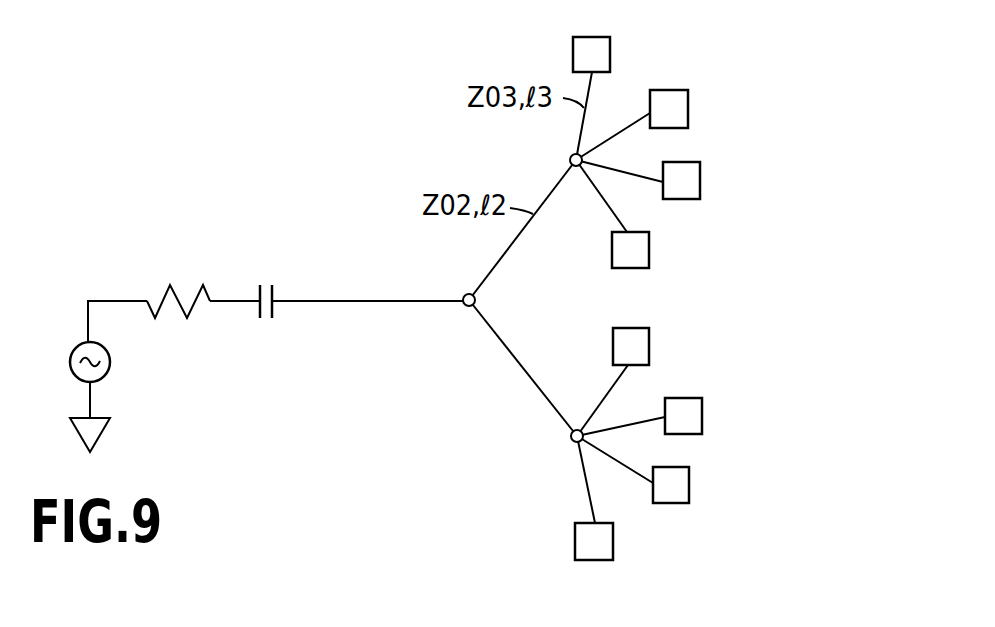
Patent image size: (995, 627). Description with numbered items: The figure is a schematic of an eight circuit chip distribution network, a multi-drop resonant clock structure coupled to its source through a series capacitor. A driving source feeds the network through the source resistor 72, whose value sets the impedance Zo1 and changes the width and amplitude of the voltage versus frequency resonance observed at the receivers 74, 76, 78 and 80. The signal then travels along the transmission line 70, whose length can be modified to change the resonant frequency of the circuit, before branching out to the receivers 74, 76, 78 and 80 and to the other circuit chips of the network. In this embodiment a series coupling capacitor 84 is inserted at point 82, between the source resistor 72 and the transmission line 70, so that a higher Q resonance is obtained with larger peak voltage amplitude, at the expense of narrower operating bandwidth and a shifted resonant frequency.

The transmission line 70 is at (353, 302).
The source resistor 72 is at (163, 293).
The receiver 74 is at (593, 37).
The receiver 76 is at (672, 90).
The receiver 78 is at (690, 199).
The receiver 80 is at (650, 253).
The point 82 is at (256, 302).
The series coupling capacitor 84 is at (275, 291).